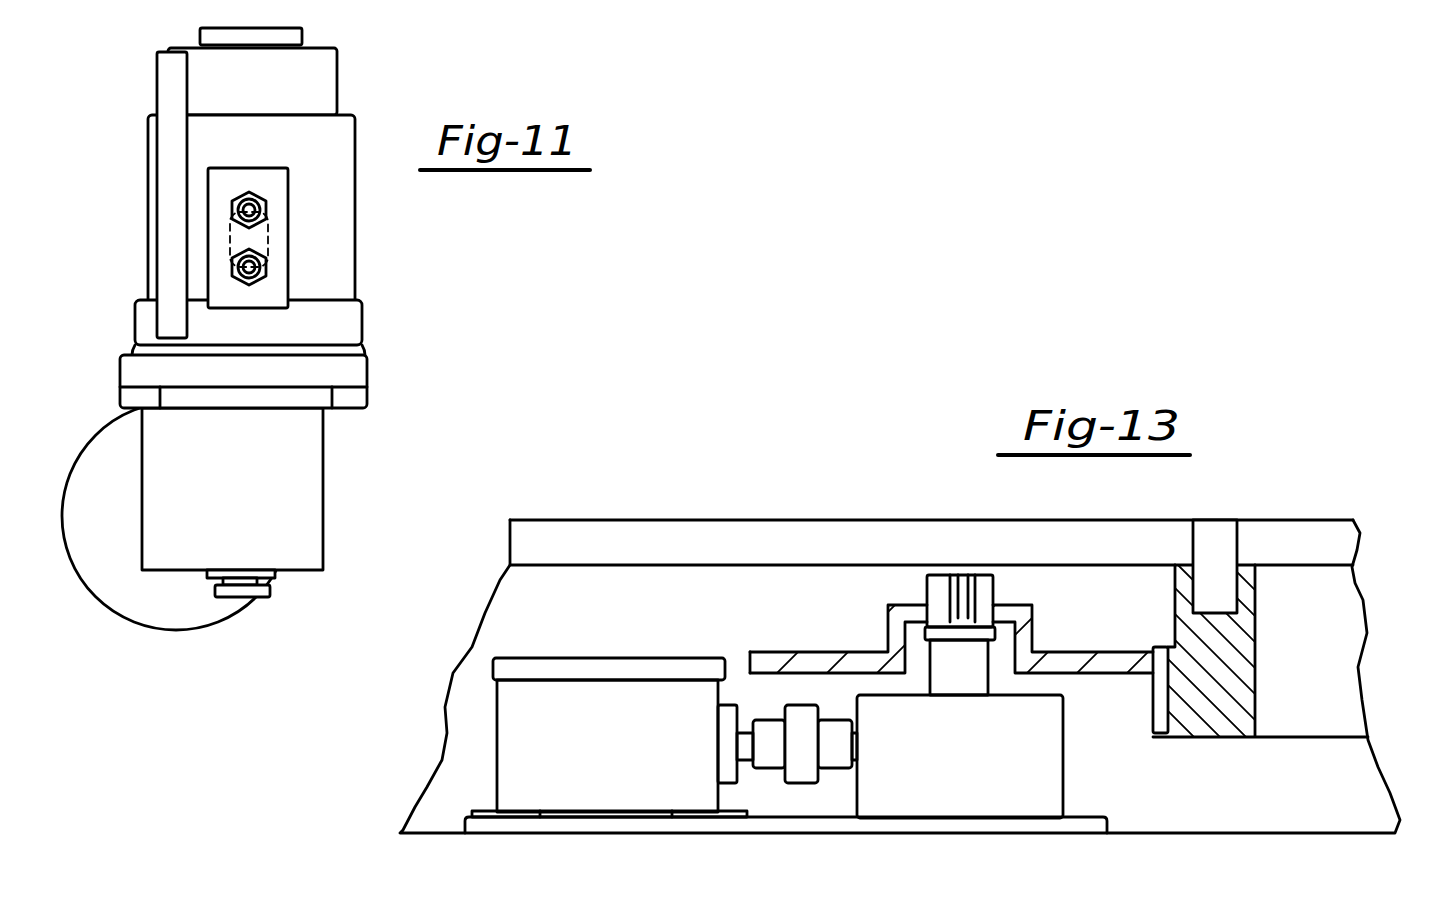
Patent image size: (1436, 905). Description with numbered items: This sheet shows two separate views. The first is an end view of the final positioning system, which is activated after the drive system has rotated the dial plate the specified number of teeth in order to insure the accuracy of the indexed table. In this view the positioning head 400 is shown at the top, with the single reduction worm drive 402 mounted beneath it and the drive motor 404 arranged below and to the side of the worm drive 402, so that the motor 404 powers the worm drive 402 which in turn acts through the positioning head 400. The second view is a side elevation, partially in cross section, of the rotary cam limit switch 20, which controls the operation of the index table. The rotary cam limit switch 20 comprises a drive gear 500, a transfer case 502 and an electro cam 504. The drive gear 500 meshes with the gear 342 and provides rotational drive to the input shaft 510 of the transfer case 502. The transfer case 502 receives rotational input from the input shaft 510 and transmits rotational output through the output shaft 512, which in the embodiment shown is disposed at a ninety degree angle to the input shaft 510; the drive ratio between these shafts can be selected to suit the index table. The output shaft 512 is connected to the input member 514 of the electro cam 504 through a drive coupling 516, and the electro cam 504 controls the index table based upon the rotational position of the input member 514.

In FIG. 13, the rotary cam limit switch 20 is at (853, 493).
In FIG. 13, the gear 342 is at (1232, 638).
In FIG. 11, the positioning head 400 is at (327, 245).
In FIG. 11, the single reduction worm drive 402 is at (295, 493).
In FIG. 11, the drive motor 404 is at (183, 593).
In FIG. 13, the drive gear 500 is at (1113, 663).
In FIG. 13, the transfer case 502 is at (990, 795).
In FIG. 13, the electro cam 504 is at (632, 782).
In FIG. 13, the input shaft 510 is at (980, 668).
In FIG. 13, the output shaft 512 is at (837, 760).
In FIG. 13, the input member 514 is at (745, 750).
In FIG. 13, the drive coupling 516 is at (803, 715).